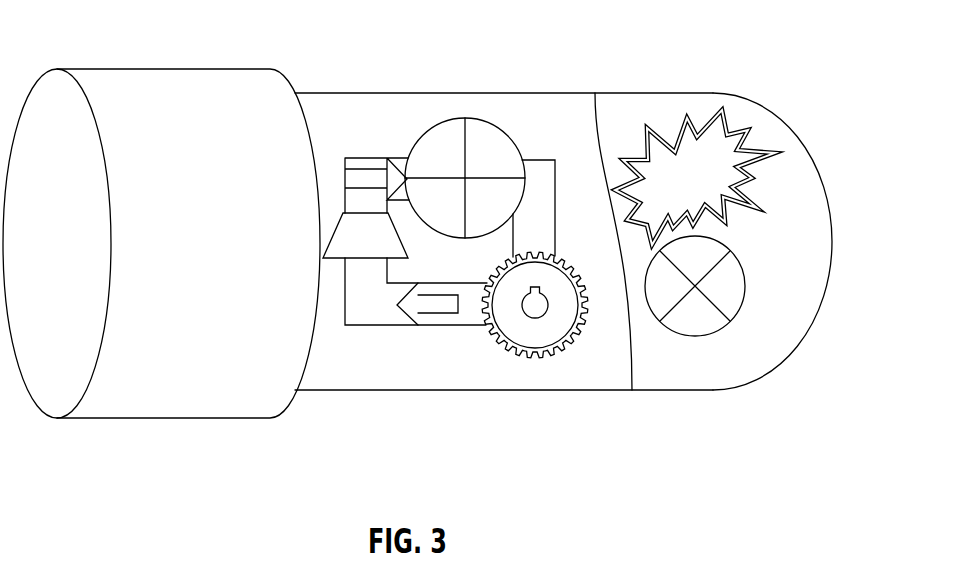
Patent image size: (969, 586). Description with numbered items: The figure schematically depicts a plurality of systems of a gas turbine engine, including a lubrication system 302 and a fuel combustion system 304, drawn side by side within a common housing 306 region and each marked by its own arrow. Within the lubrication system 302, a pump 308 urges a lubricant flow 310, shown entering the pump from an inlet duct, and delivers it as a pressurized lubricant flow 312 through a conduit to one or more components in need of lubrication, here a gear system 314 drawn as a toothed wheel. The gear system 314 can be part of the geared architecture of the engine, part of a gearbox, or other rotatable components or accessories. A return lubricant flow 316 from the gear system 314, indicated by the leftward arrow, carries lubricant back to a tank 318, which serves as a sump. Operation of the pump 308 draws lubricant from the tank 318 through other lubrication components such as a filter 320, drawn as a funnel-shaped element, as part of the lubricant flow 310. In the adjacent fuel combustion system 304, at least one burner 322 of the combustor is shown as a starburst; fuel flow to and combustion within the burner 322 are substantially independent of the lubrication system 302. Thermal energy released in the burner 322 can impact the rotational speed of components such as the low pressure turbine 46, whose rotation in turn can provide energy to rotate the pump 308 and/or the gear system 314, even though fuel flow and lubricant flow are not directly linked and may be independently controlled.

The low pressure turbine 46 is at (745, 284).
The lubrication system 302 is at (404, 118).
The fuel combustion system 304 is at (631, 118).
The housing 306 is at (334, 346).
The pump 308 is at (465, 119).
The lubricant flow 310 is at (366, 178).
The pressurized lubricant flow 312 is at (525, 160).
The gear system 314 is at (533, 320).
The return lubricant flow 316 is at (440, 325).
The tank 318 is at (368, 325).
The filter 320 is at (333, 232).
The burner 322 is at (753, 153).